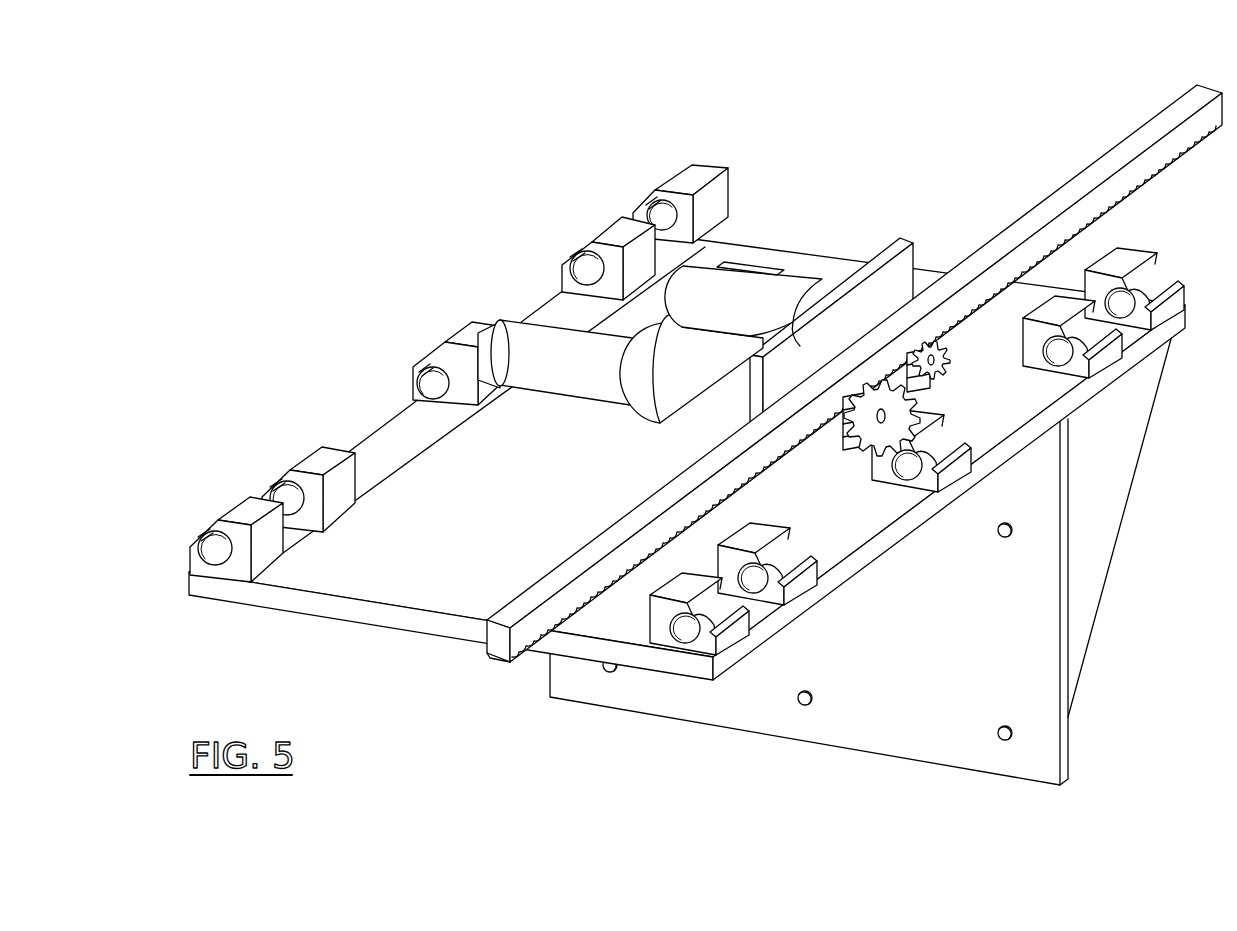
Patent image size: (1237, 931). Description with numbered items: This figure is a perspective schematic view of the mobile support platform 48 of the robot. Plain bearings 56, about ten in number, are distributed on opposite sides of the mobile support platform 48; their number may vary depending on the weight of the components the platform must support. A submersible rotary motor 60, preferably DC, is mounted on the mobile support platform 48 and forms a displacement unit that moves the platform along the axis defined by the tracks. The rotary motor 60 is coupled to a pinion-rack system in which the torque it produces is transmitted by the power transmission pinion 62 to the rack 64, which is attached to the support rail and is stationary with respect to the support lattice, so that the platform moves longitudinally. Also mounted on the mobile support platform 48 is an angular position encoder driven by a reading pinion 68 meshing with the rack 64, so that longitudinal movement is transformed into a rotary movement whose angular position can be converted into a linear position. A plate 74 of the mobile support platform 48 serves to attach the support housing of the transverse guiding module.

The mobile support platform 48 is at (385, 310).
The plain bearings 56 is at (413, 392).
The submersible rotary motor 60 is at (530, 330).
The power transmission pinion 62 is at (890, 420).
The rack 64 is at (1147, 130).
The reading pinion 68 is at (947, 375).
The plate 74 is at (885, 727).